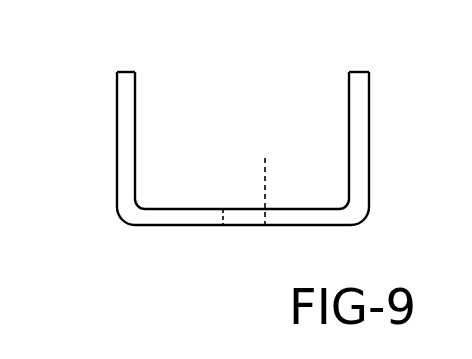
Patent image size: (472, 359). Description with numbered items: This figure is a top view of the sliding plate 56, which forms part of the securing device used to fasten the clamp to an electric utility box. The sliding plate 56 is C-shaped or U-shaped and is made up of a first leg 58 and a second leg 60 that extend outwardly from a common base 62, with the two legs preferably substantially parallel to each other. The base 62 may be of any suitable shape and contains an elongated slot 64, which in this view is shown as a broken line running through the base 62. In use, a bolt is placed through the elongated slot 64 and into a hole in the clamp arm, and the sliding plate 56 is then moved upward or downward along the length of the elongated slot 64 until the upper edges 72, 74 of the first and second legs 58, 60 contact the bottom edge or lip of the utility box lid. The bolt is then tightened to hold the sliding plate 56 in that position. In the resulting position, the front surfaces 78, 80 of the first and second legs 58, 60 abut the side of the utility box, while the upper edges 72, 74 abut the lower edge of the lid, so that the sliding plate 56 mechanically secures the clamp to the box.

The sliding plate 56 is at (223, 138).
The first leg 58 is at (120, 106).
The second leg 60 is at (353, 103).
The base 62 is at (172, 208).
The elongated slot 64 is at (263, 179).
The upper edge 72 is at (128, 117).
The upper edge 74 is at (354, 115).
The front surface 78 is at (125, 70).
The front surface 80 is at (359, 69).